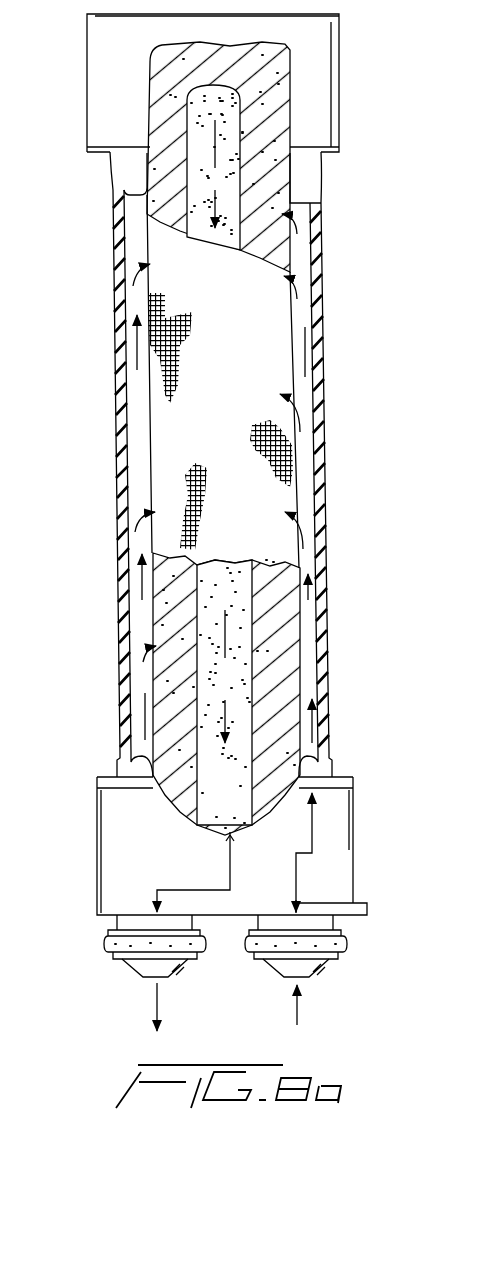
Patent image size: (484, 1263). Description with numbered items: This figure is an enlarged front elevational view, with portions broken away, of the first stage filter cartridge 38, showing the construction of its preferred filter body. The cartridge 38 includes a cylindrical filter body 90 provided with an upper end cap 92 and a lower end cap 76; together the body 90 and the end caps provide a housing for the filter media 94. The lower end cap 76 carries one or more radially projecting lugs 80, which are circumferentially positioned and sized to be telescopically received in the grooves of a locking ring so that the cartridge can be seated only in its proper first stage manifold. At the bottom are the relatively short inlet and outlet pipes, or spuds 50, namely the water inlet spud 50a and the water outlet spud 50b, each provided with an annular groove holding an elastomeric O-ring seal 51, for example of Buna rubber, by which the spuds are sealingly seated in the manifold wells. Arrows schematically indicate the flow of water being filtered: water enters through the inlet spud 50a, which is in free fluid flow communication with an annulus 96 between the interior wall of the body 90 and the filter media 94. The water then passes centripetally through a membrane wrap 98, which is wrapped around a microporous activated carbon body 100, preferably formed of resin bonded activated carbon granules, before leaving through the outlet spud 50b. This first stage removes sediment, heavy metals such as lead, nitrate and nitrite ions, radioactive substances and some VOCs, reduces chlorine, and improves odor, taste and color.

The upper end cap 92 is at (103, 83).
The first stage filter cartridge 38 is at (96, 230).
The membrane wrap 98 is at (191, 410).
The cylindrical filter body 90 is at (118, 458).
The filter media 94 is at (141, 628).
The annulus 96 is at (310, 632).
The microporous activated carbon body 100 is at (285, 678).
The lower end cap 76 is at (120, 850).
The radially projecting lug 80 is at (367, 908).
The O-ring seal 51 is at (105, 940).
The water inlet spud 50a is at (320, 970).
The water outlet spud 50b is at (130, 970).
The spuds 50 is at (264, 987).